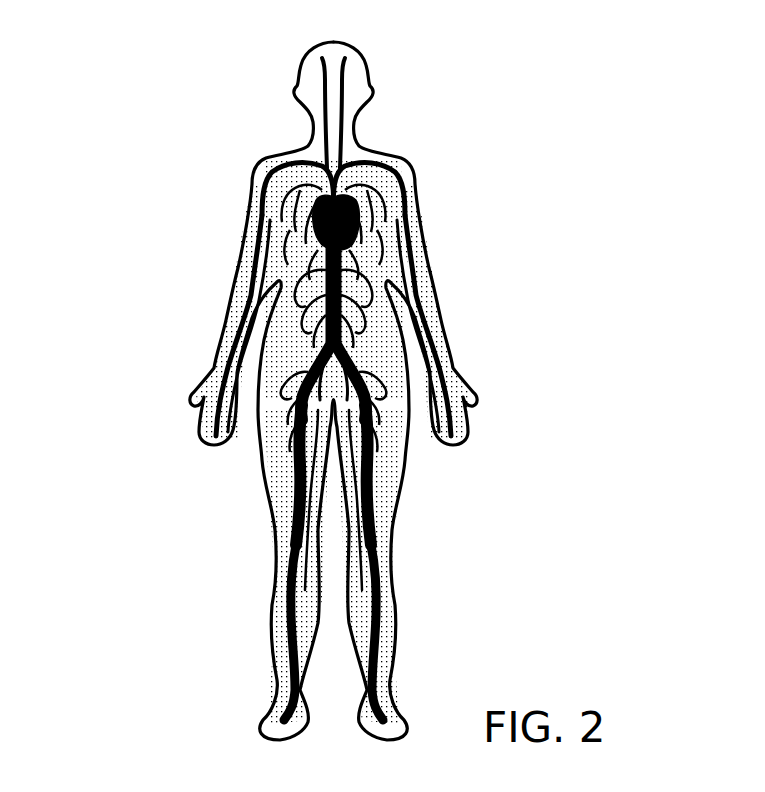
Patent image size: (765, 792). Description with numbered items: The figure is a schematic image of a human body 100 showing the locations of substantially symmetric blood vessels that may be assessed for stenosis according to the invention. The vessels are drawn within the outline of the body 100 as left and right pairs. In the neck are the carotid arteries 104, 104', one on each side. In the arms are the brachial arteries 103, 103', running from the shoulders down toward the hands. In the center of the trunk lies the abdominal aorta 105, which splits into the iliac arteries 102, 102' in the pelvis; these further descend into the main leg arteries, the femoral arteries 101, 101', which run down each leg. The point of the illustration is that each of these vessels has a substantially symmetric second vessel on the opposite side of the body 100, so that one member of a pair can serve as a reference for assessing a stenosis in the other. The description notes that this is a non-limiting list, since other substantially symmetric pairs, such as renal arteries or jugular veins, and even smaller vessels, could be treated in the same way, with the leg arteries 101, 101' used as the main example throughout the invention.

The body 100 is at (113, 135).
The femoral artery 101 is at (413, 562).
The femoral artery 101' is at (254, 562).
The iliac artery 102 is at (424, 366).
The iliac artery 102' is at (243, 366).
The brachial artery 103 is at (455, 325).
The brachial artery 103' is at (210, 325).
The carotid artery 104 is at (394, 113).
The carotid artery 104' is at (275, 113).
The abdominal aorta 105 is at (340, 269).